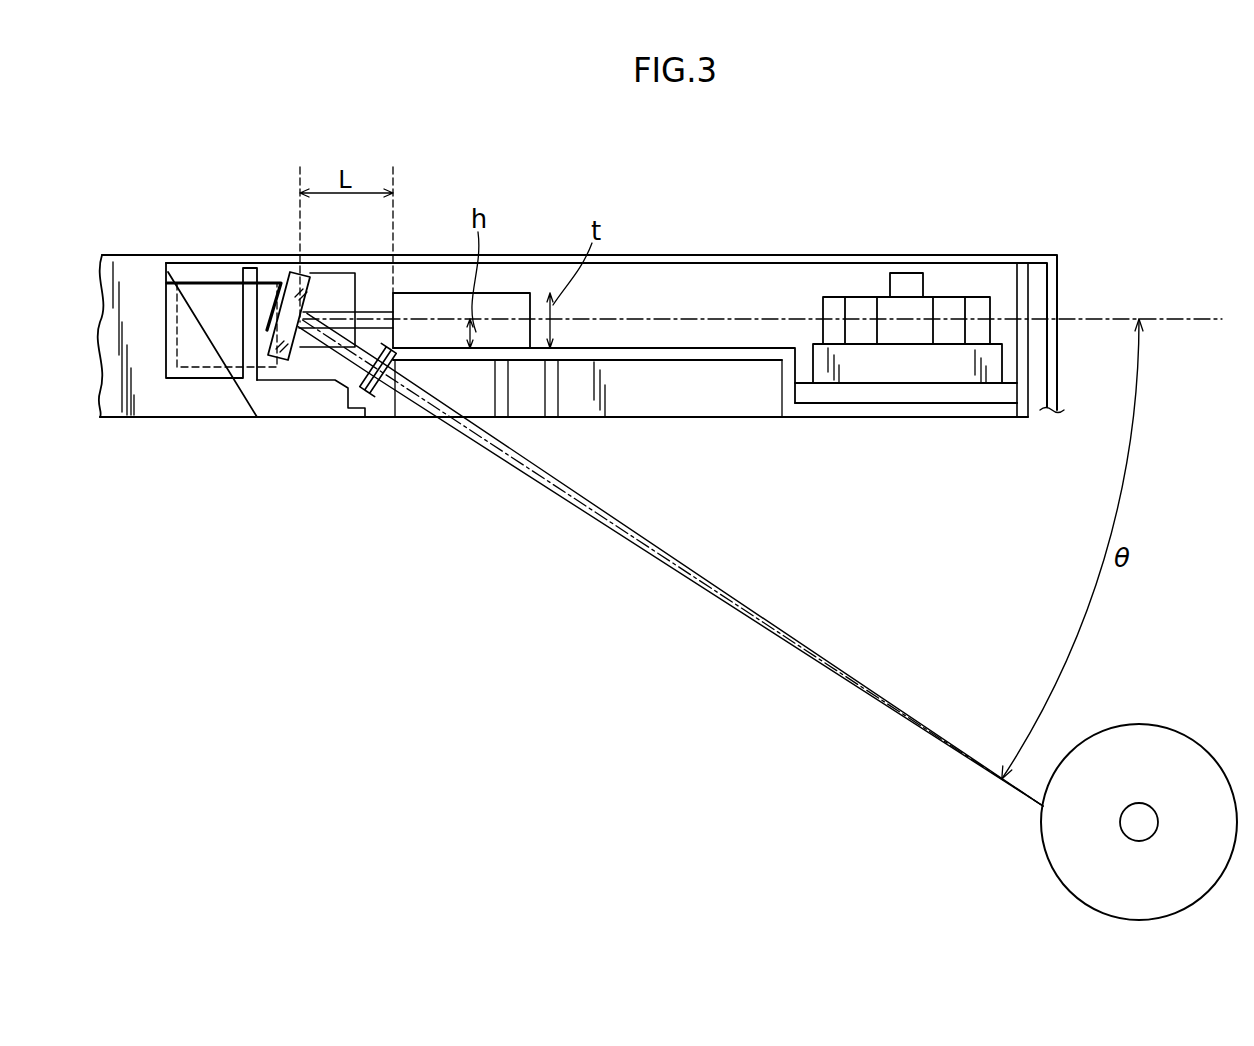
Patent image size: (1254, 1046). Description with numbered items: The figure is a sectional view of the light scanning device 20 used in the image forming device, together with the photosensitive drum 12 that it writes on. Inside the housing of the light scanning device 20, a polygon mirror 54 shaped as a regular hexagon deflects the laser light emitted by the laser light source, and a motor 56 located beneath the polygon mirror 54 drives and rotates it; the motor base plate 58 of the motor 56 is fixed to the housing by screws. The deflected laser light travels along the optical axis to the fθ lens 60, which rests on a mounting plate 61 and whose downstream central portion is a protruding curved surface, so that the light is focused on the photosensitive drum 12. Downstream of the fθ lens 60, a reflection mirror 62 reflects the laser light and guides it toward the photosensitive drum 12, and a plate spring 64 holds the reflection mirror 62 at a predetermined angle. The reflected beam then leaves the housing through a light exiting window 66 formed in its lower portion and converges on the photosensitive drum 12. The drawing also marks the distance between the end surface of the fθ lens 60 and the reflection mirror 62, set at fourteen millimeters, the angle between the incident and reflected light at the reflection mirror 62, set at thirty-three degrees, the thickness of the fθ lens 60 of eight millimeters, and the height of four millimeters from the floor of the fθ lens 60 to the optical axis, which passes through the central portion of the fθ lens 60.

The photosensitive drum 12 is at (1162, 725).
The light scanning device 20 is at (823, 237).
The polygon mirror 54 is at (952, 297).
The motor 56 is at (973, 374).
The motor base plate 58 is at (855, 395).
The fθ lens 60 is at (502, 293).
The mounting plate 61 is at (657, 350).
The reflection mirror 62 is at (304, 272).
The plate spring 64 is at (276, 278).
The light exiting window 66 is at (383, 390).